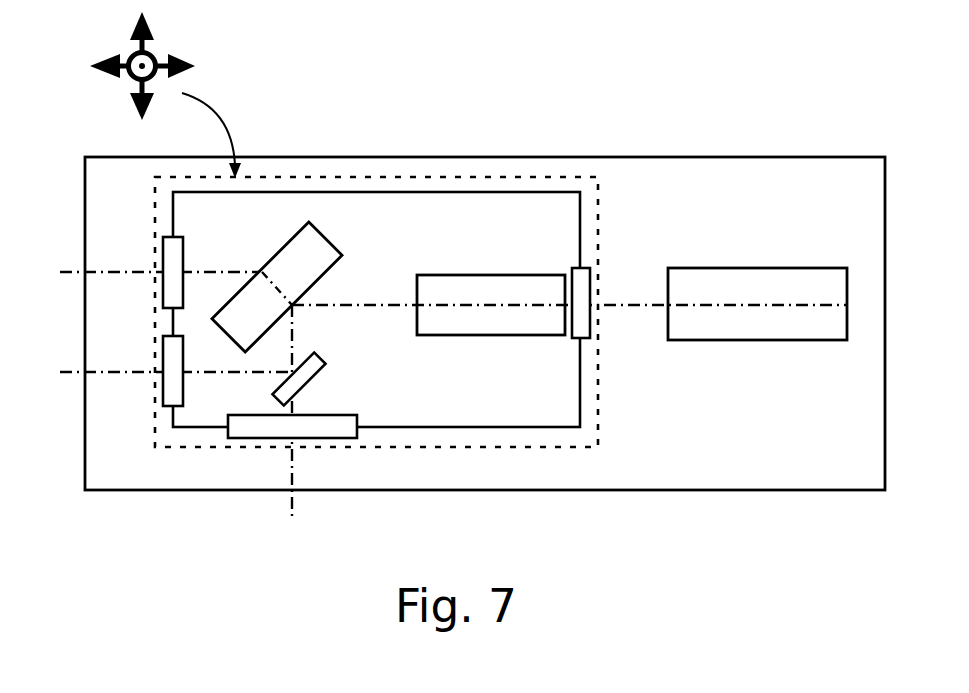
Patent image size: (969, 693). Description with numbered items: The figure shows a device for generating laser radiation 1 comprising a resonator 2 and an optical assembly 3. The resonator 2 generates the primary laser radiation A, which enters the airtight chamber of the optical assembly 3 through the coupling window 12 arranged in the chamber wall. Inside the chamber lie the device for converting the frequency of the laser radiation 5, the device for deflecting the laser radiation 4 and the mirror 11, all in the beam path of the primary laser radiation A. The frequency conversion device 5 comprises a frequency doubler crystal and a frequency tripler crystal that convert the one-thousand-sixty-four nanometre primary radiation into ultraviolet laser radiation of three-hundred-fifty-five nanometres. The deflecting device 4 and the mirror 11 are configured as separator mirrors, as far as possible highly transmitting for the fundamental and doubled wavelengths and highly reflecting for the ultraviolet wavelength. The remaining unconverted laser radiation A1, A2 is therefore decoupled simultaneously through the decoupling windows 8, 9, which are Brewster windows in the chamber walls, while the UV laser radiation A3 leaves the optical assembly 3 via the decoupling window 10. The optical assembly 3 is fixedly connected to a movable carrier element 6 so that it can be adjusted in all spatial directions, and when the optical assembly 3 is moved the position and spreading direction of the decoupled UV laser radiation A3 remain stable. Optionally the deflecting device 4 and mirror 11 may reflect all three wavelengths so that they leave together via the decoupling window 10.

The device for generating laser radiation 1 is at (485, 277).
The resonator 2 is at (733, 342).
The optical assembly 3 is at (598, 418).
The device for deflecting the laser radiation 4 is at (277, 287).
The device for converting the frequency of the laser radiation 5 is at (492, 335).
The movable carrier element 6 is at (376, 309).
The decoupling window 8 is at (310, 413).
The decoupling window 9 is at (163, 293).
The decoupling window 10 is at (163, 393).
The mirror 11 is at (319, 357).
The coupling window 12 is at (590, 268).
The primary laser radiation A is at (607, 303).
The remaining laser radiation A1 is at (292, 507).
The remaining laser radiation A2 is at (70, 275).
The UV laser radiation A3 is at (70, 373).